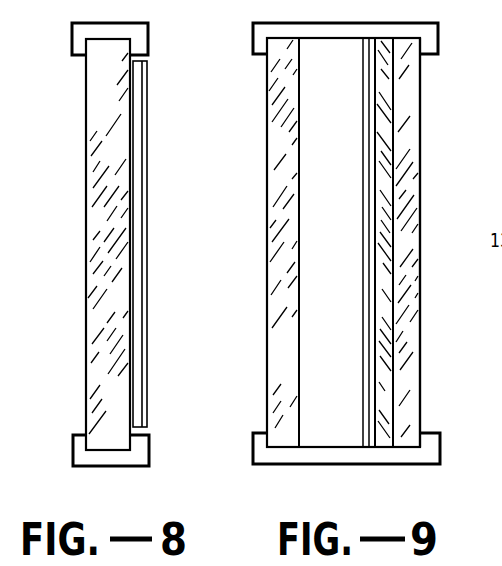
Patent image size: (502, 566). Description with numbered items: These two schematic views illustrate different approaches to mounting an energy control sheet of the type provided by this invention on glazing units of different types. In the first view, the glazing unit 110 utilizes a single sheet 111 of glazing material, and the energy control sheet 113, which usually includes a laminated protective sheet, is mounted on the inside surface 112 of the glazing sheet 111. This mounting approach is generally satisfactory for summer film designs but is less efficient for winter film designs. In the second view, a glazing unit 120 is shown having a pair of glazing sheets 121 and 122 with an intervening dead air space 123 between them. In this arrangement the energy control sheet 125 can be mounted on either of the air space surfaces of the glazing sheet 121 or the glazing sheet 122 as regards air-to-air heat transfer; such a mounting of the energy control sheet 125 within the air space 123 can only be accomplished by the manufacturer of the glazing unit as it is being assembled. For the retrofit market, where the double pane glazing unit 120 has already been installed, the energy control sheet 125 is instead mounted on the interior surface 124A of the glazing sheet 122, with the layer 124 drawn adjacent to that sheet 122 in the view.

In FIG. 8, the glazing unit 110 is at (88, 264).
In FIG. 8, the sheet of glazing material 111 is at (93, 207).
In FIG. 8, the inside surface 112 is at (129, 96).
In FIG. 8, the energy control sheet 113 is at (137, 272).
In FIG. 9, the glazing unit 120 is at (311, 296).
In FIG. 9, the glazing sheet 121 is at (282, 222).
In FIG. 9, the glazing sheet 122 is at (412, 290).
In FIG. 9, the dead air space 123 is at (307, 385).
In FIG. 9, the film layer 124 is at (388, 233).
In FIG. 9, the interior surface 124A is at (420, 179).
In FIG. 9, the energy control sheet 125 is at (382, 135).